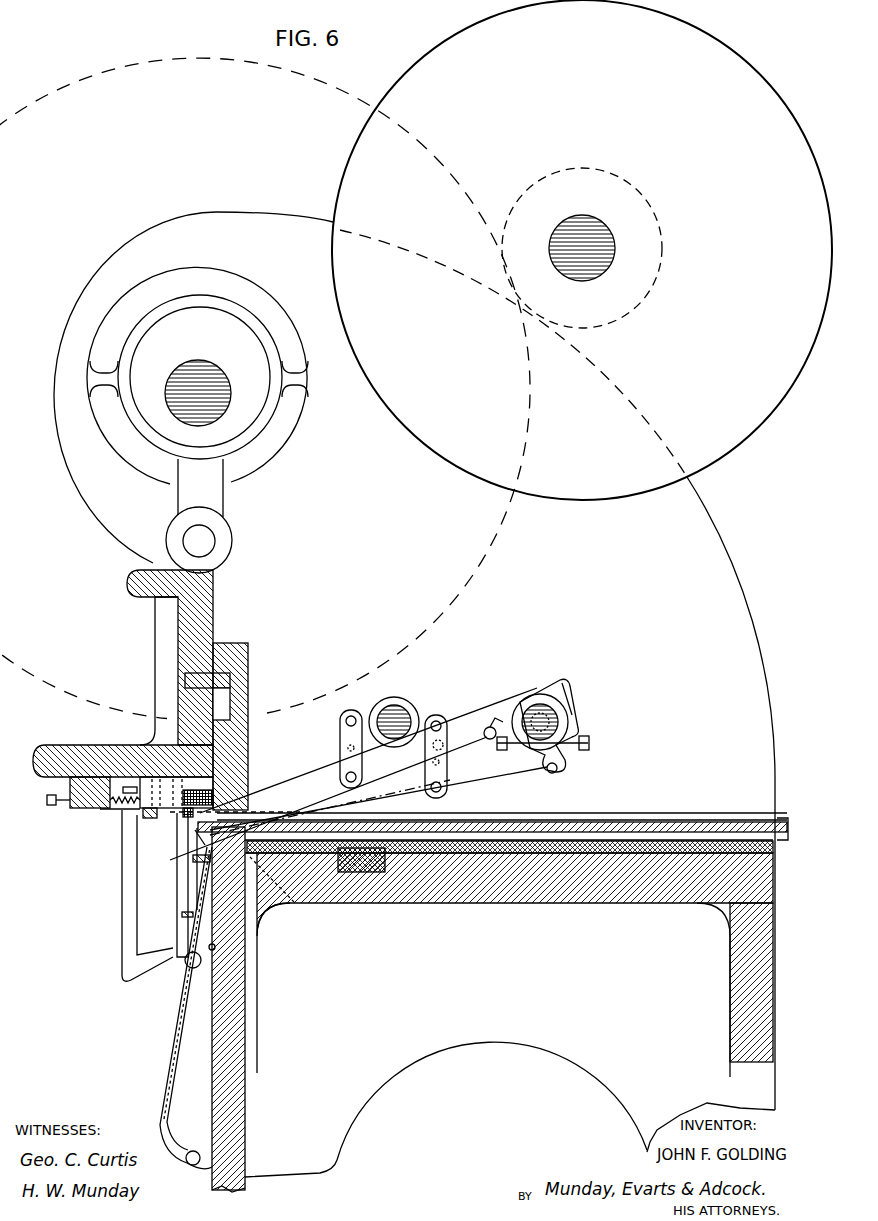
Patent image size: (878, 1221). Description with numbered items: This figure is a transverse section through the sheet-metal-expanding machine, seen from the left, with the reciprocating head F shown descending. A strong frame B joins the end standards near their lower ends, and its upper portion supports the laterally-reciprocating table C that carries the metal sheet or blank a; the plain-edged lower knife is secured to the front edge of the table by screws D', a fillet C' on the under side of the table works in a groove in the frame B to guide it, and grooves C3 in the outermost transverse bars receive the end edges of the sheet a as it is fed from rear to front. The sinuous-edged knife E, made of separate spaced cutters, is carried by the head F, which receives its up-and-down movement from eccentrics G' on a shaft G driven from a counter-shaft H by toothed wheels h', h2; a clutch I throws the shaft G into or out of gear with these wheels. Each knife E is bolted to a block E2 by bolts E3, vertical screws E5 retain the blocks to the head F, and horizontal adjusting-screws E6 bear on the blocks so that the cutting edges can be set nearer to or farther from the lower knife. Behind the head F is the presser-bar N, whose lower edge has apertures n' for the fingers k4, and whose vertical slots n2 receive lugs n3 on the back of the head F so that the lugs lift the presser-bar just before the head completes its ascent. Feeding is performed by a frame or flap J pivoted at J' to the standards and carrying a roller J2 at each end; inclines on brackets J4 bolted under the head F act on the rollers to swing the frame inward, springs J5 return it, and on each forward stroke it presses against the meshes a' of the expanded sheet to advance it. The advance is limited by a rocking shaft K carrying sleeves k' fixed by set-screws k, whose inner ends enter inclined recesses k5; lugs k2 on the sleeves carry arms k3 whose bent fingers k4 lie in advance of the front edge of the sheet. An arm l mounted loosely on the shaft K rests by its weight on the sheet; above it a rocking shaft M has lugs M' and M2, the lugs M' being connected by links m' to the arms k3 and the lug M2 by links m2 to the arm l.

The counter-shaft H is at (612, 243).
The toothed wheel h' is at (593, 248).
The toothed wheel h2 is at (276, 70).
The frame B is at (731, 948).
The laterally-reciprocating table C is at (492, 1008).
The fillet C' is at (361, 891).
The screws D' is at (283, 894).
The grooves C3 is at (536, 822).
The metal sheet a is at (478, 807).
The eccentrics G' is at (193, 392).
The shaft G is at (203, 389).
The reciprocating head F is at (200, 604).
The bolts E3 is at (140, 798).
The block E2 is at (135, 768).
The sinuous-edged knife E is at (180, 807).
The horizontal adjusting-screws E6 is at (47, 800).
The vertical screws E5 is at (195, 830).
The presser-bar N is at (247, 743).
The lugs n3 is at (231, 675).
The vertical slots n2 is at (231, 705).
The apertures n' is at (208, 800).
The clutch I is at (353, 774).
The arms k3 is at (471, 781).
The fingers k4 is at (197, 833).
The rocking shaft M is at (394, 707).
The lug M2 is at (360, 712).
The lugs M' is at (432, 742).
The links m2 is at (340, 742).
The links m' is at (413, 765).
The arm l is at (484, 734).
The rocking shaft K is at (545, 705).
The inclined recesses k5 is at (531, 712).
The sleeves k' is at (583, 702).
The lugs k2 is at (559, 768).
The set-screws k is at (540, 749).
The brackets J4 is at (127, 913).
The meshes a' is at (179, 885).
The springs J5 is at (215, 947).
The roller J2 is at (190, 965).
The frame J is at (173, 1008).
The pivot J' is at (187, 1142).